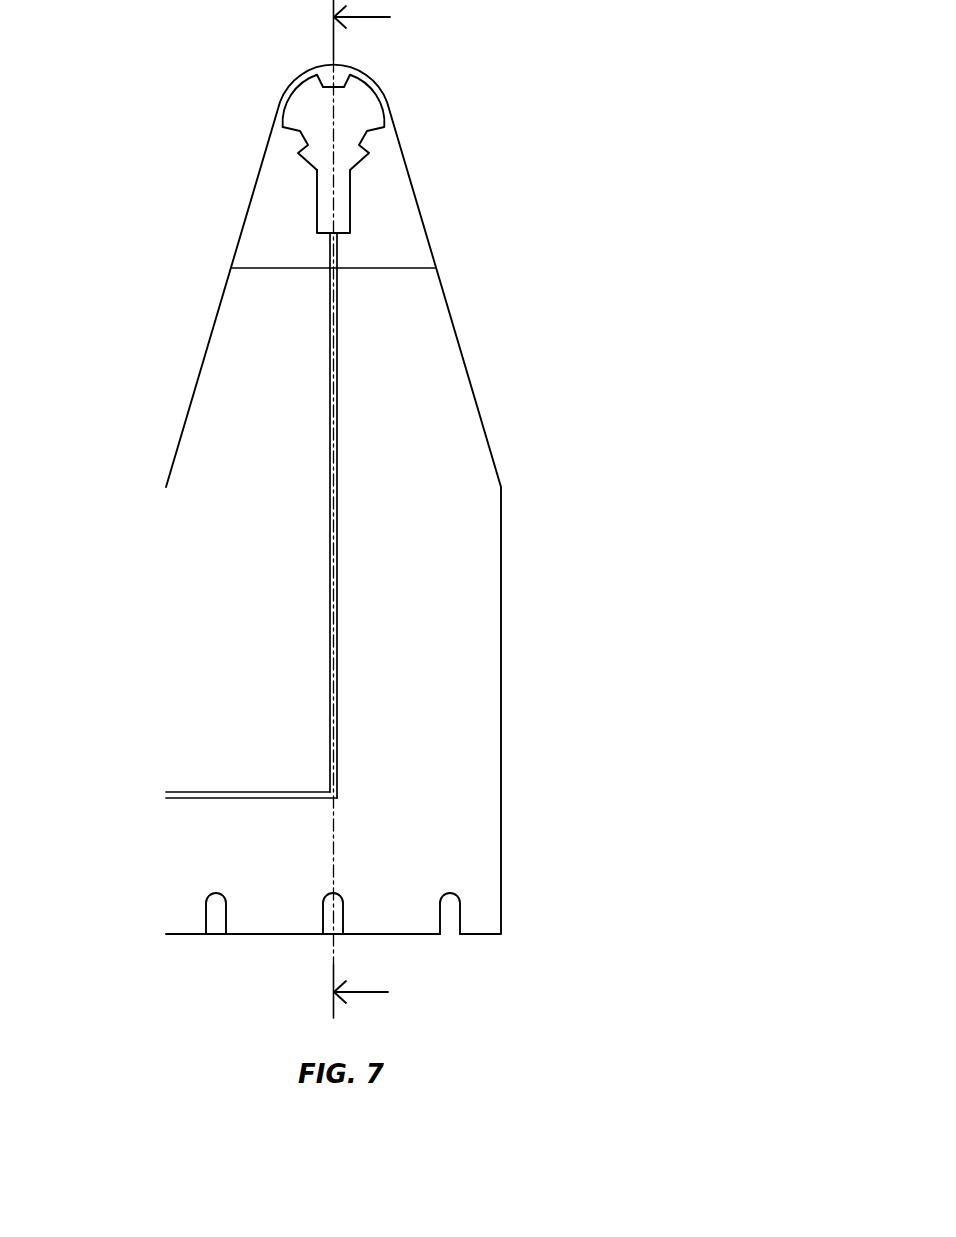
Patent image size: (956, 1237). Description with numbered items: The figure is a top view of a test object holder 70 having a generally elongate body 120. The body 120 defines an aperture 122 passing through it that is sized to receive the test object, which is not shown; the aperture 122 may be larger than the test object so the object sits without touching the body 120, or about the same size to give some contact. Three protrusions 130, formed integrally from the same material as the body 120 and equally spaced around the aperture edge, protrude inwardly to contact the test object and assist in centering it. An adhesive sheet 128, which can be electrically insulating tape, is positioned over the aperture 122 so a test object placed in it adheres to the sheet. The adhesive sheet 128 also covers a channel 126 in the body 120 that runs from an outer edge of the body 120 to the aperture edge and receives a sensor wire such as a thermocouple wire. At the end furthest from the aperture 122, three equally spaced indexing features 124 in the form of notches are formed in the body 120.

The test object holder 70 is at (590, 138).
The body 120 is at (482, 620).
The aperture 122 is at (360, 118).
The indexing features 124 is at (450, 907).
The channel 126 is at (190, 793).
The adhesive sheet 128 is at (258, 243).
The protrusions 130 is at (297, 148).